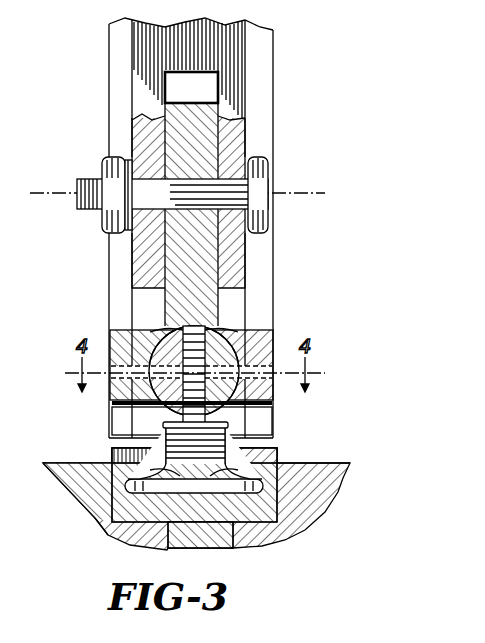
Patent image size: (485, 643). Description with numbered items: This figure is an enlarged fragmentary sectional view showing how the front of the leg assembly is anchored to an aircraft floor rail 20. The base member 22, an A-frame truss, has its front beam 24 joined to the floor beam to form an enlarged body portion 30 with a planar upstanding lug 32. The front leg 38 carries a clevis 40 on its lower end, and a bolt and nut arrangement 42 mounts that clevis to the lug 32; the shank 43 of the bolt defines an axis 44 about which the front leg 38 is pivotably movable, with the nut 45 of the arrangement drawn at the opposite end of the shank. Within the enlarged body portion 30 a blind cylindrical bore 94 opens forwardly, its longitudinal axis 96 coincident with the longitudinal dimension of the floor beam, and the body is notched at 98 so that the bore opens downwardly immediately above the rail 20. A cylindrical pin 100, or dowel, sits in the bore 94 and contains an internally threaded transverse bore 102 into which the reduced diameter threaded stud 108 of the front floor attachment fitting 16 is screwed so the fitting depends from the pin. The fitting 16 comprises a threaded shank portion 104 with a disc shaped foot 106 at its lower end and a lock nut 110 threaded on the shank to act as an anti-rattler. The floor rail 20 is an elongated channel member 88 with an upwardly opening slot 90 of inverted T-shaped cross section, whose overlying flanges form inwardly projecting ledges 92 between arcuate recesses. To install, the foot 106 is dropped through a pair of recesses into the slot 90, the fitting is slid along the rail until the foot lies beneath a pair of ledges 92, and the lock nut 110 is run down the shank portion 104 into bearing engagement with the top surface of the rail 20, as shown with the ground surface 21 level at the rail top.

The front floor attachment fitting 16 is at (233, 432).
The floor rail 20 is at (280, 538).
The ground surface 21 is at (345, 464).
The base member 22 is at (274, 322).
The front beam 24 is at (262, 54).
The enlarged body portion 30 is at (126, 334).
The upstanding lug 32 is at (208, 258).
The front leg 38 is at (140, 36).
The clevis 40 is at (232, 146).
The bolt and nut arrangement 42 is at (258, 165).
The shank 43 is at (174, 210).
The axis 44 is at (58, 193).
The nut 45 is at (117, 195).
The channel member 88 is at (100, 520).
The slot 90 is at (128, 488).
The ledges 92 is at (132, 462).
The blind cylindrical bore 94 is at (150, 388).
The longitudinal axis 96 is at (224, 344).
The notch 98 is at (112, 418).
The cylindrical pin 100 is at (242, 386).
The internally threaded transverse bore 102 is at (216, 327).
The threaded shank portion 104 is at (178, 436).
The disc shaped foot 106 is at (190, 508).
The threaded stud 108 is at (172, 327).
The lock nut 110 is at (278, 452).